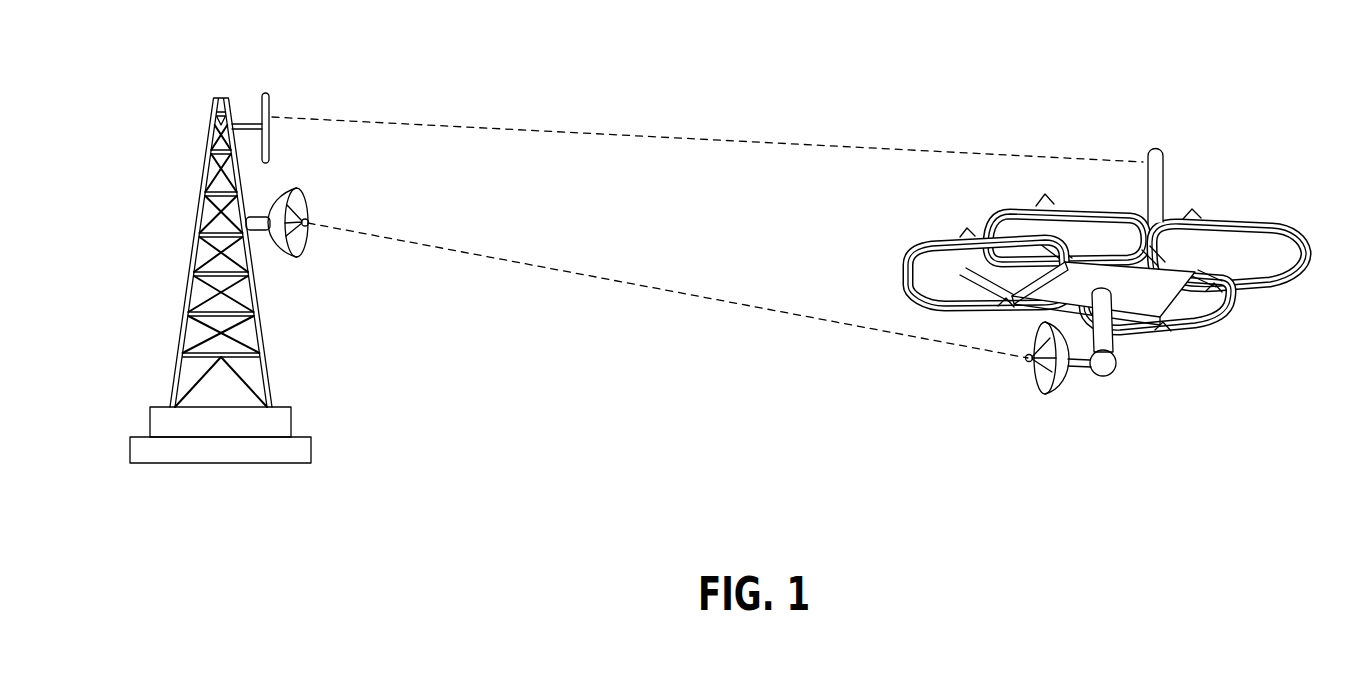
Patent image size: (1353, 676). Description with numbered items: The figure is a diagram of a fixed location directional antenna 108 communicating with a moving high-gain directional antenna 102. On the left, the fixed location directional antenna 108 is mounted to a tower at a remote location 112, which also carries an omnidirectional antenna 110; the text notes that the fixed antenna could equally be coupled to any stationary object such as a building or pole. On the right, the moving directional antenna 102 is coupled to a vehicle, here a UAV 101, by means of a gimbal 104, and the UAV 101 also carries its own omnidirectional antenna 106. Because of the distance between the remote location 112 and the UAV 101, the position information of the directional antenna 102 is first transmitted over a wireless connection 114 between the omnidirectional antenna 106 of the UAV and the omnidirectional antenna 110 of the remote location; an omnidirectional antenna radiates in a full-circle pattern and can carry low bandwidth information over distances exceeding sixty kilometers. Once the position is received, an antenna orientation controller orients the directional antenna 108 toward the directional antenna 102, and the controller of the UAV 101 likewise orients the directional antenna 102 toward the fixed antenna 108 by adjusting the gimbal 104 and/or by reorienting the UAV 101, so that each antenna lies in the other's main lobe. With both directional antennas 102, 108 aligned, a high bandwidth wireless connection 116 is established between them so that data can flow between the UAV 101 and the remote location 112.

The UAV 101 is at (1262, 229).
The moving high-gain directional antenna 102 is at (1056, 387).
The gimbal 104 is at (1117, 368).
The omnidirectional antenna 106 is at (1163, 162).
The fixed location directional antenna 108 is at (306, 249).
The omnidirectional antenna 110 is at (270, 102).
The remote location 112 is at (201, 139).
The wireless connection 114 is at (622, 135).
The high bandwidth wireless connection 116 is at (656, 288).